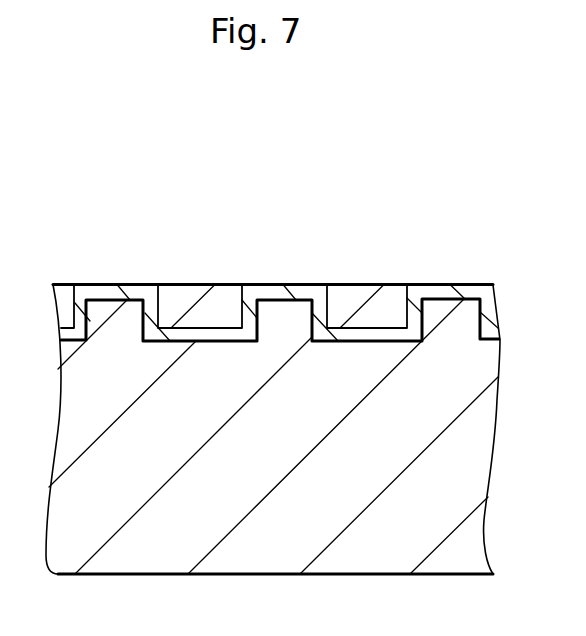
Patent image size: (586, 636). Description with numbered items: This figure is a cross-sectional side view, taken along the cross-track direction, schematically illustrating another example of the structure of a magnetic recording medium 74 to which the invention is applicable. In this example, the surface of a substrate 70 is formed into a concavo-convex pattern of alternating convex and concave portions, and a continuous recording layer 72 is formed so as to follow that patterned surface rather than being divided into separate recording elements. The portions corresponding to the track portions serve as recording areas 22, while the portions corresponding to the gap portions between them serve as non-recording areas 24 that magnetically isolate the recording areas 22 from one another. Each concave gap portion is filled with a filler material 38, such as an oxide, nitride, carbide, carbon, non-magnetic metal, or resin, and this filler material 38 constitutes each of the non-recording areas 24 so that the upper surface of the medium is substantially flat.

The recording area 22 is at (73, 278).
The non-recording area 24 is at (160, 278).
The filler material 38 is at (198, 321).
The substrate 70 is at (496, 437).
The continuous recording layer 72 is at (494, 302).
The magnetic recording medium 74 is at (284, 156).